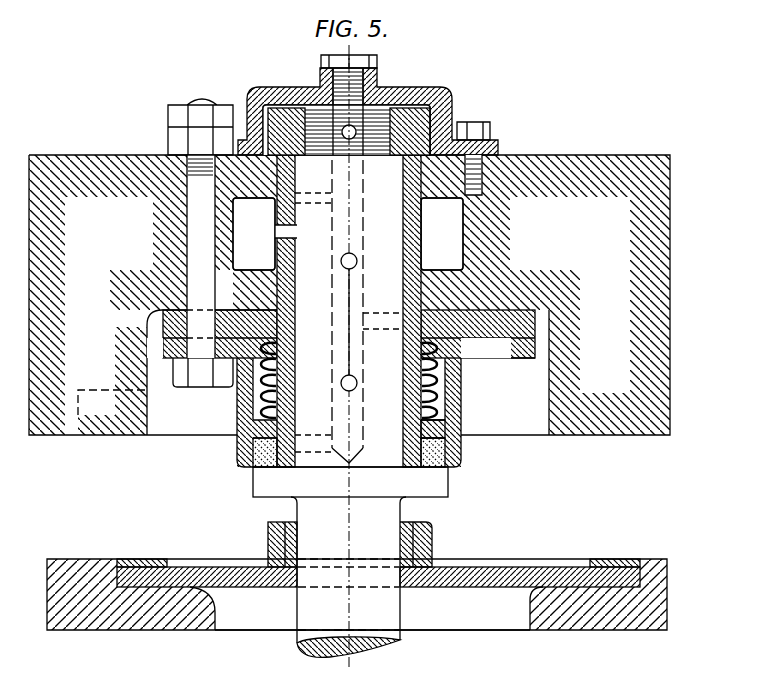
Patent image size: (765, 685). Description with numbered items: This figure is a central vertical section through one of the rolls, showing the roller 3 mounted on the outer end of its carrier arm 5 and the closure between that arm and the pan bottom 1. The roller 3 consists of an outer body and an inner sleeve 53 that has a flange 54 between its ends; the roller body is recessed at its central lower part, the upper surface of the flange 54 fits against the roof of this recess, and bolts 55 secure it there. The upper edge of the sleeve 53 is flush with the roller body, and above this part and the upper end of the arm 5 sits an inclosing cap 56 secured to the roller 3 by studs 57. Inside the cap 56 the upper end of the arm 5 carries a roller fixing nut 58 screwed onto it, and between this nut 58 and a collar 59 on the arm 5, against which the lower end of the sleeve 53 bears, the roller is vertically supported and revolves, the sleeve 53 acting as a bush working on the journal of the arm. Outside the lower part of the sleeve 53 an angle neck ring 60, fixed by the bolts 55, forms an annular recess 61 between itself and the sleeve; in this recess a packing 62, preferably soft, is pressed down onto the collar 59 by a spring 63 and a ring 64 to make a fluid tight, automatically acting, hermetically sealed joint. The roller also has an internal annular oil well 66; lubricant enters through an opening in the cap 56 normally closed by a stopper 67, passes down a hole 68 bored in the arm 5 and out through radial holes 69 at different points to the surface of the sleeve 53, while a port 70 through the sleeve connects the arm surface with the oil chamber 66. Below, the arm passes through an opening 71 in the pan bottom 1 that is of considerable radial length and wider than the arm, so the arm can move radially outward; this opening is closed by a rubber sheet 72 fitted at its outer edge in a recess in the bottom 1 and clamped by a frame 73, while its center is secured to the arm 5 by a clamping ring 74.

The pan bottom 1 is at (125, 622).
The roller 3 is at (85, 165).
The carrier arm 5 is at (280, 607).
The sleeve 53 is at (405, 208).
The flange 54 is at (165, 328).
The bolts 55 is at (200, 382).
The inclosing cap 56 is at (280, 88).
The studs 57 is at (476, 123).
The roller fixing nut 58 is at (406, 120).
The collar 59 is at (440, 484).
The angle neck ring 60 is at (452, 391).
The annular recess 61 is at (437, 373).
The packing 62 is at (443, 455).
The spring 63 is at (440, 408).
The ring 64 is at (443, 426).
The oil well 66 is at (348, 234).
The stopper 67 is at (366, 61).
The hole 68 is at (338, 296).
The radial holes 69 is at (304, 195).
The port 70 is at (280, 233).
The opening 71 is at (452, 622).
The rubber sheet 72 is at (456, 578).
The frame 73 is at (134, 560).
The clamping ring 74 is at (268, 527).